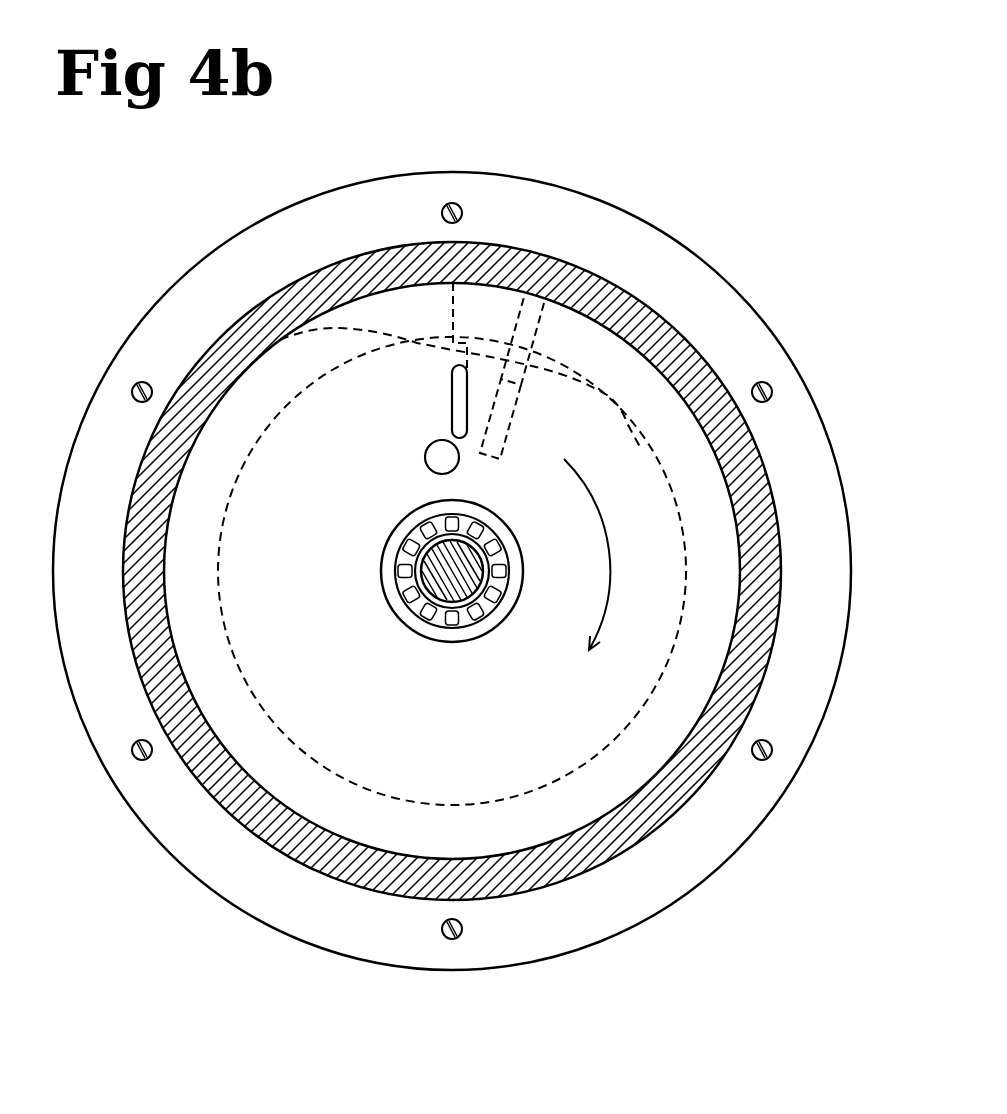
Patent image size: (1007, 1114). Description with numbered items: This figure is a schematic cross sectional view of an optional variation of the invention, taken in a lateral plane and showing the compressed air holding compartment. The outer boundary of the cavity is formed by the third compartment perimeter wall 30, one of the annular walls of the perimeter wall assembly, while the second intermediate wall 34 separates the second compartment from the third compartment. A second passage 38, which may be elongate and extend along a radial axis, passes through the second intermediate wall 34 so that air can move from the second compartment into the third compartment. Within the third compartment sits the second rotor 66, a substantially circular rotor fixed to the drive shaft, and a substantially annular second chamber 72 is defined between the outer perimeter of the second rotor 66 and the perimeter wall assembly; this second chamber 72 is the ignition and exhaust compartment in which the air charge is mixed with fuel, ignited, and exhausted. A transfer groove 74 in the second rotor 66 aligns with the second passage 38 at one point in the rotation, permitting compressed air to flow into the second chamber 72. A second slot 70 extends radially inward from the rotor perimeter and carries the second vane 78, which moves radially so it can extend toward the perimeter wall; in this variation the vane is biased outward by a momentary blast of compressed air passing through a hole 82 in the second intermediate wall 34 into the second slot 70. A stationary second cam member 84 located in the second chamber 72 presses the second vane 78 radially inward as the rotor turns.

The third compartment perimeter wall 30 is at (697, 345).
The second intermediate wall 34 is at (125, 337).
The second passage 38 is at (450, 405).
The second rotor 66 is at (617, 407).
The second slot 70 is at (510, 417).
The second chamber 72 is at (487, 315).
The transfer groove 74 is at (453, 350).
The second vane 78 is at (543, 303).
The hole 82 is at (454, 469).
The second cam member 84 is at (407, 317).